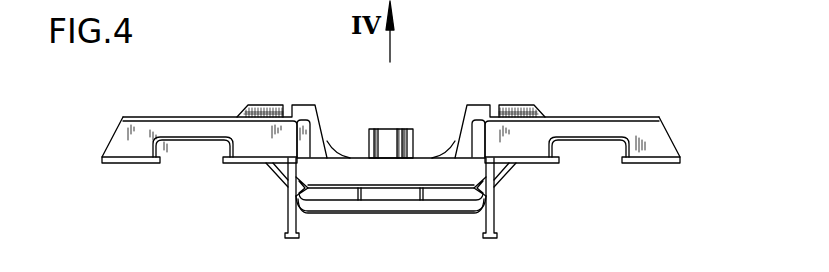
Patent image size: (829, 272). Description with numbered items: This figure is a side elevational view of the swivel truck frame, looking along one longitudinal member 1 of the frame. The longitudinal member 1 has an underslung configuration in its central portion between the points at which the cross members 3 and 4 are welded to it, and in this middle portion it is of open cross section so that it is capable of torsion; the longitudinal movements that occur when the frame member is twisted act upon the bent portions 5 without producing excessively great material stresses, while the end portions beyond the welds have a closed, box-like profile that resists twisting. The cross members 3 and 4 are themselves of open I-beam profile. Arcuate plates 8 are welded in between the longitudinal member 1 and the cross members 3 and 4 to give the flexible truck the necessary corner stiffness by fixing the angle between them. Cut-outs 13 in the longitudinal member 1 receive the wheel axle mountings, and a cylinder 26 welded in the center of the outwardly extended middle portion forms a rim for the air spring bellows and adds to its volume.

The longitudinal member 1 is at (123, 143).
The cross member 3 is at (517, 110).
The cross member 4 is at (261, 110).
The bent portions 5 is at (307, 213).
The arcuate plates 8 is at (445, 152).
The cut-outs 13 is at (192, 150).
The cylinder 26 is at (386, 137).